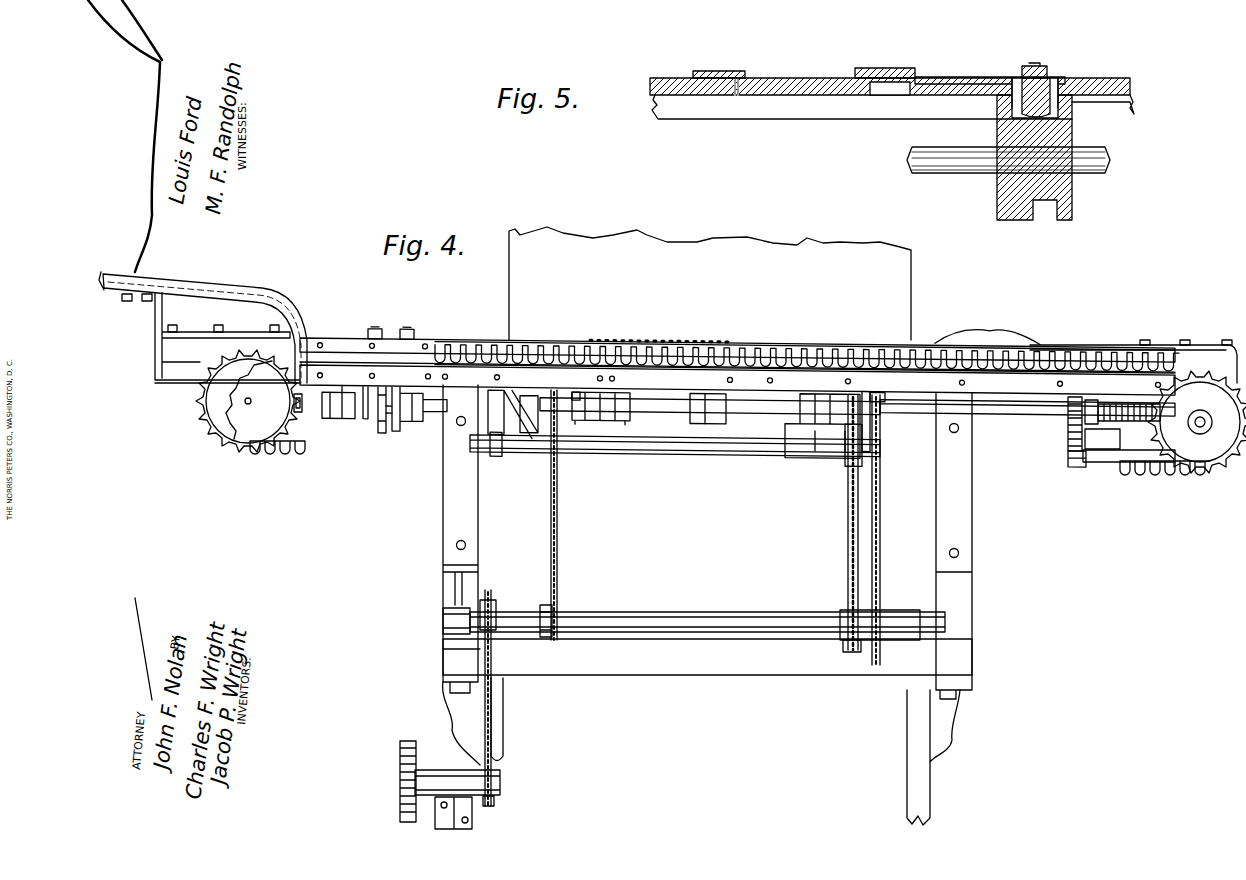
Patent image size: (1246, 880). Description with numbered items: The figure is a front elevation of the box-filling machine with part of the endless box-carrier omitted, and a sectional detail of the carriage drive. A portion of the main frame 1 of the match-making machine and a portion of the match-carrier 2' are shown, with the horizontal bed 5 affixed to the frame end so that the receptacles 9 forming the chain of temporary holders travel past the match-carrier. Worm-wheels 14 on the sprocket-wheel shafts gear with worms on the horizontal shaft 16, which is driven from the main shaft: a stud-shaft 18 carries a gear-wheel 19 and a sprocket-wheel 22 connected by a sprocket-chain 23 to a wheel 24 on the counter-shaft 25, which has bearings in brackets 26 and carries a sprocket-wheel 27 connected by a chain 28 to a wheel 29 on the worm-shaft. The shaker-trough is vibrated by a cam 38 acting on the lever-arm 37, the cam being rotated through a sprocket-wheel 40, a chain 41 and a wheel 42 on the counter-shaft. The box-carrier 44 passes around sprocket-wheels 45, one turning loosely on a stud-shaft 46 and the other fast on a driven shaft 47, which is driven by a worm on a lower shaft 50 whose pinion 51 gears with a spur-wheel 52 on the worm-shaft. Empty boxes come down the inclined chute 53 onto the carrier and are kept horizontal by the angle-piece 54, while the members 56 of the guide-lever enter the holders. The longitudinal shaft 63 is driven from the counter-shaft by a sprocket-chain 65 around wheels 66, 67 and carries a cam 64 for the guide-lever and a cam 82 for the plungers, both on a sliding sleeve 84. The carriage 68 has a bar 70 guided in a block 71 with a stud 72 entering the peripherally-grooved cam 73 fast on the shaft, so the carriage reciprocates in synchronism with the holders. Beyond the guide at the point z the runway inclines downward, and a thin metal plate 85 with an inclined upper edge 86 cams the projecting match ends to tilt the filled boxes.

In FIG. 4, the main frame 1 is at (975, 521).
In FIG. 4, the match-carrier 2' is at (710, 274).
In FIG. 5, the horizontal bed 5 is at (713, 103).
In FIG. 4, the horizontal bed 5 is at (173, 380).
In FIG. 4, the receptacles 9 is at (988, 340).
In FIG. 4, the worm-wheels 14 is at (304, 406).
In FIG. 4, the horizontal shaft 16 is at (997, 408).
In FIG. 4, the stud-shaft 18 is at (505, 783).
In FIG. 4, the gear-wheel 19 is at (405, 741).
In FIG. 4, the sprocket-wheel 22 is at (496, 802).
In FIG. 4, the sprocket-chain 23 is at (441, 652).
In FIG. 4, the sprocket-wheel 24 is at (493, 598).
In FIG. 4, the counter-shaft 25 is at (707, 608).
In FIG. 4, the brackets 26 is at (440, 614).
In FIG. 4, the sprocket-wheel 27 is at (878, 614).
In FIG. 4, the chain 28 is at (882, 504).
In FIG. 4, the wheel 29 is at (877, 398).
In FIG. 4, the lever-arm 37 is at (855, 458).
In FIG. 4, the cam 38 is at (830, 447).
In FIG. 4, the sprocket-wheel 40 is at (867, 420).
In FIG. 4, the chain 41 is at (846, 546).
In FIG. 4, the wheel 42 is at (843, 646).
In FIG. 4, the box-carrier 44 is at (290, 455).
In FIG. 4, the sprocket-wheels 45 is at (218, 418).
In FIG. 4, the stud-shaft 46 is at (258, 386).
In FIG. 4, the driven shaft 47 is at (1200, 416).
In FIG. 4, the lower shaft 50 is at (1148, 472).
In FIG. 4, the pinion 51 is at (1078, 459).
In FIG. 4, the spur-wheel 52 is at (1066, 424).
In FIG. 4, the inclined chute 53 is at (230, 294).
In FIG. 4, the angle-piece 54 is at (334, 346).
In FIG. 4, the members 56 is at (405, 331).
In FIG. 5, the shaft 63 is at (975, 175).
In FIG. 4, the shaft 63 is at (478, 448).
In FIG. 4, the cam 64 is at (401, 428).
In FIG. 4, the sprocket-chain 65 is at (559, 525).
In FIG. 4, the wheel 66 is at (568, 412).
In FIG. 4, the wheel 67 is at (556, 613).
In FIG. 5, the carriage 68 is at (784, 84).
In FIG. 5, the bar 70 is at (958, 80).
In FIG. 5, the block 71 is at (1050, 69).
In FIG. 5, the stud 72 is at (1012, 110).
In FIG. 5, the peripherally-grooved cam 73 is at (1075, 206).
In FIG. 4, the peripherally-grooved cam 73 is at (497, 433).
In FIG. 4, the cam 82 is at (380, 432).
In FIG. 4, the sleeve 84 is at (388, 440).
In FIG. 4, the thin metal plate 85 is at (824, 360).
In FIG. 4, the inclined upper edge 86 is at (1068, 345).
In FIG. 4, the point z is at (581, 388).